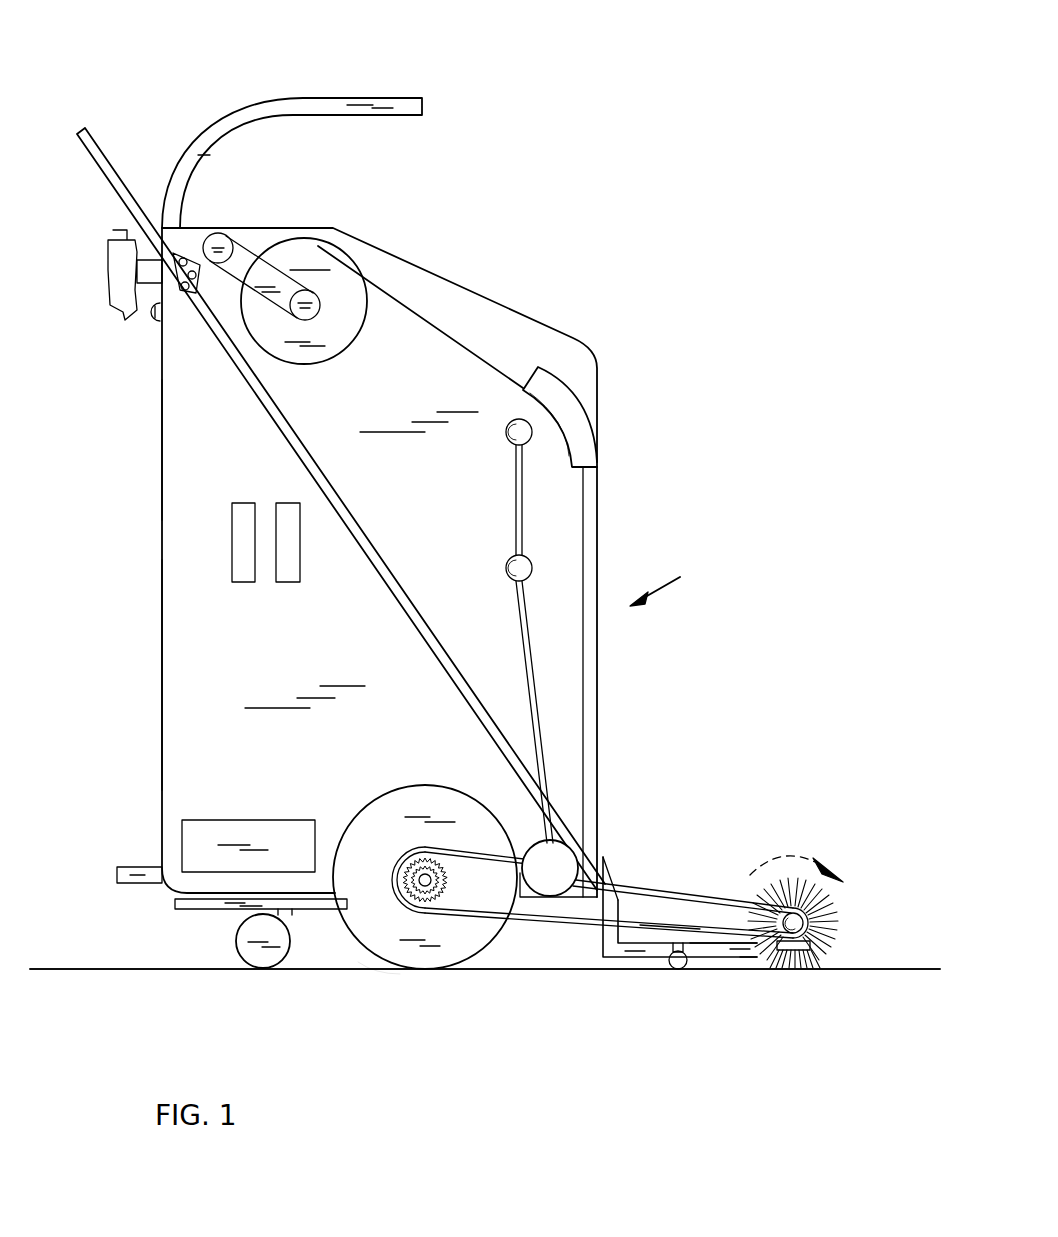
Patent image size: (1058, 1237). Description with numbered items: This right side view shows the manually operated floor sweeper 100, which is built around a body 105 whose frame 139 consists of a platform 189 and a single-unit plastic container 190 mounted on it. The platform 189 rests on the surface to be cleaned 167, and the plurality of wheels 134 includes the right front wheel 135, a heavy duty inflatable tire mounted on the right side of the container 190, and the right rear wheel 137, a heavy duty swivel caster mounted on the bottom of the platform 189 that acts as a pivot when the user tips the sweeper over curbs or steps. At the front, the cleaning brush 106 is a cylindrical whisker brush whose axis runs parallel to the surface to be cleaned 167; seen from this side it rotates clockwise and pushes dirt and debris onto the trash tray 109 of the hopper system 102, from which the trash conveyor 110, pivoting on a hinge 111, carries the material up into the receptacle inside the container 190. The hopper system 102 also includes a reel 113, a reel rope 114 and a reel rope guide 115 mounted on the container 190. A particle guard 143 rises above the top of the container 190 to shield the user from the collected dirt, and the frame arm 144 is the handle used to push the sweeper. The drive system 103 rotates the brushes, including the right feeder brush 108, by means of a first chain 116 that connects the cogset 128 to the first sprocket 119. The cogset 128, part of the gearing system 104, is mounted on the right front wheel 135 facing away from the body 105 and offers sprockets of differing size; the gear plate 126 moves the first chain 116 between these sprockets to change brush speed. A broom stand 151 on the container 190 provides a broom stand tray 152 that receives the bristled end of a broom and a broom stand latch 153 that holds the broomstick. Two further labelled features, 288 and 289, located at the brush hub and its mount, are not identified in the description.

The manually operated floor sweeper 100 is at (132, 58).
The hopper system 102 is at (653, 950).
The drive system 103 is at (697, 933).
The gearing system 104 is at (440, 895).
The body 105 is at (450, 368).
The cleaning brush 106 is at (790, 882).
The right feeder brush 108 is at (797, 960).
The trash tray 109 is at (730, 950).
The trash conveyor 110 is at (665, 927).
The hinge 111 is at (675, 972).
The reel 113 is at (352, 303).
The reel rope 114 is at (512, 353).
The reel rope guide 115 is at (575, 428).
The first chain 116 is at (625, 950).
The first sprocket 119 is at (757, 953).
The gear plate 126 is at (550, 885).
The cogset 128 is at (420, 890).
The plurality of wheels 134 is at (340, 950).
The right front wheel 135 is at (402, 802).
The right rear wheel 137 is at (258, 958).
The frame 139 is at (684, 580).
The particle guard 143 is at (313, 107).
The frame arm 144 is at (102, 155).
The broom stand 151 is at (208, 572).
The broom stand tray 152 is at (252, 820).
The broom stand latch 153 is at (290, 565).
The surface to be cleaned 167 is at (128, 972).
The platform 189 is at (205, 905).
The container 190 is at (190, 442).
The brush hub 288 is at (805, 915).
The brush mount 289 is at (812, 947).